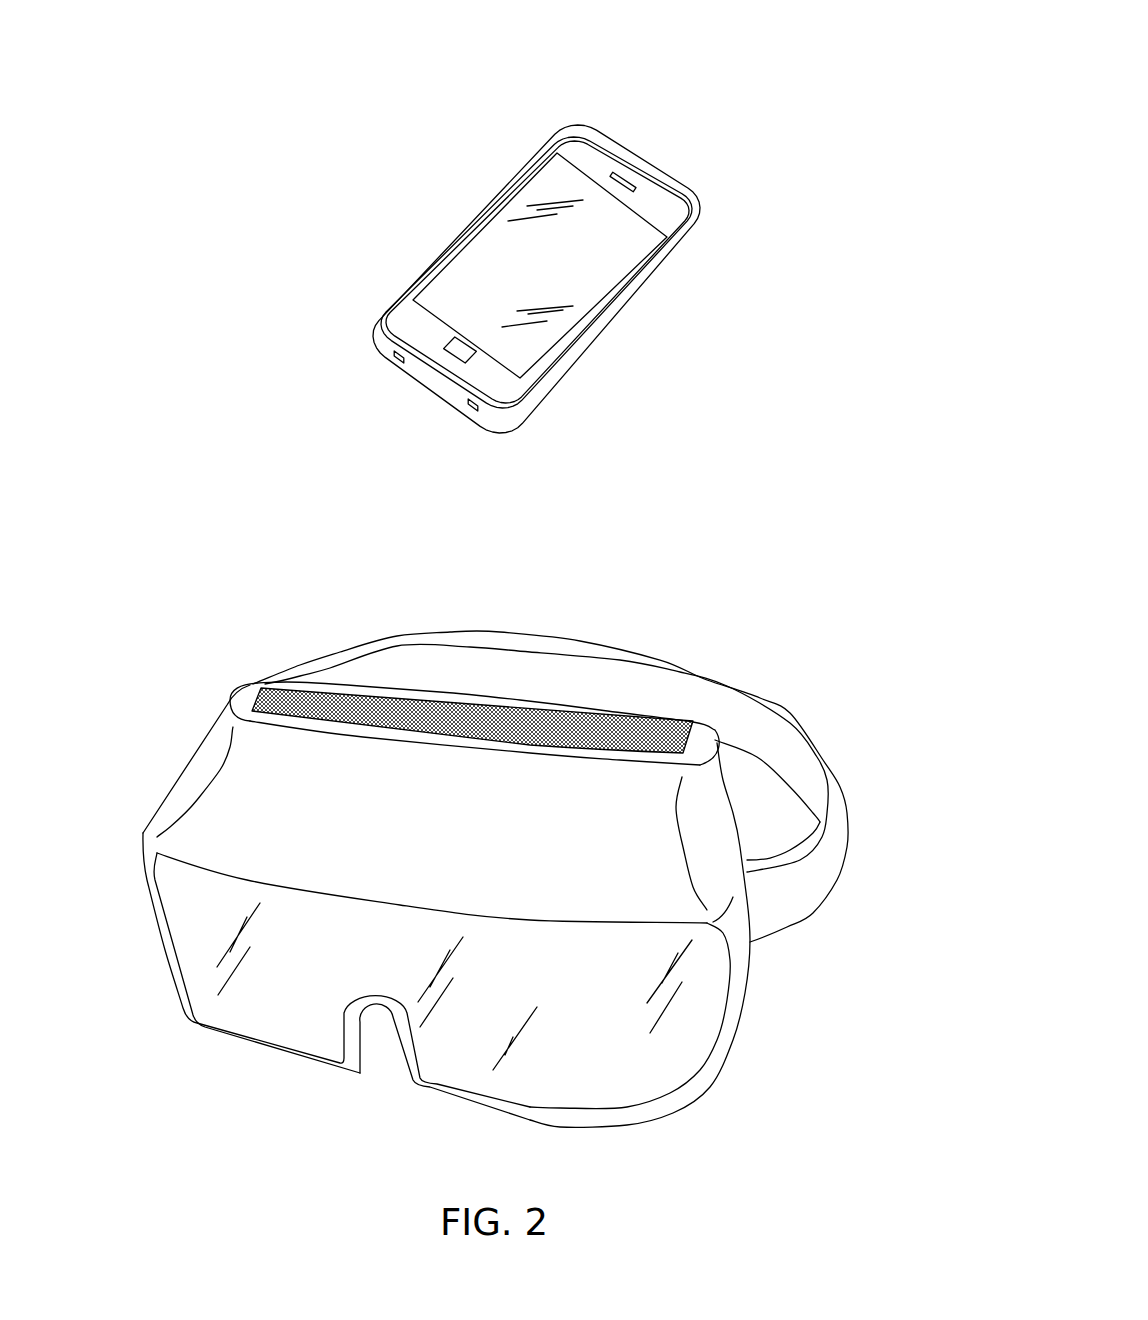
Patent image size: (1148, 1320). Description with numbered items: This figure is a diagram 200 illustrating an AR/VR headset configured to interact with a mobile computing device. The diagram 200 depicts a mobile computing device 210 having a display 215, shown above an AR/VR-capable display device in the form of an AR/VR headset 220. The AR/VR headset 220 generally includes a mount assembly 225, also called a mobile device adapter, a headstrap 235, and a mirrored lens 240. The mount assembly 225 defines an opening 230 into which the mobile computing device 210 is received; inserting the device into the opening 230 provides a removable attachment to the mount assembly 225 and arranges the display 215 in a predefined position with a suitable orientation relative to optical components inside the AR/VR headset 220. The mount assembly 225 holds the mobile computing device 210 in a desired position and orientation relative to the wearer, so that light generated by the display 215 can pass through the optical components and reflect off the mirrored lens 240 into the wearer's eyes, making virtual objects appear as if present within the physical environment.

The diagram 200 is at (750, 45).
The mobile computing device 210 is at (657, 172).
The display 215 is at (480, 267).
The AR/VR headset 220 is at (155, 640).
The mount assembly 225 is at (170, 803).
The opening 230 is at (498, 717).
The headstrap 235 is at (823, 870).
The mirrored lens 240 is at (650, 1068).